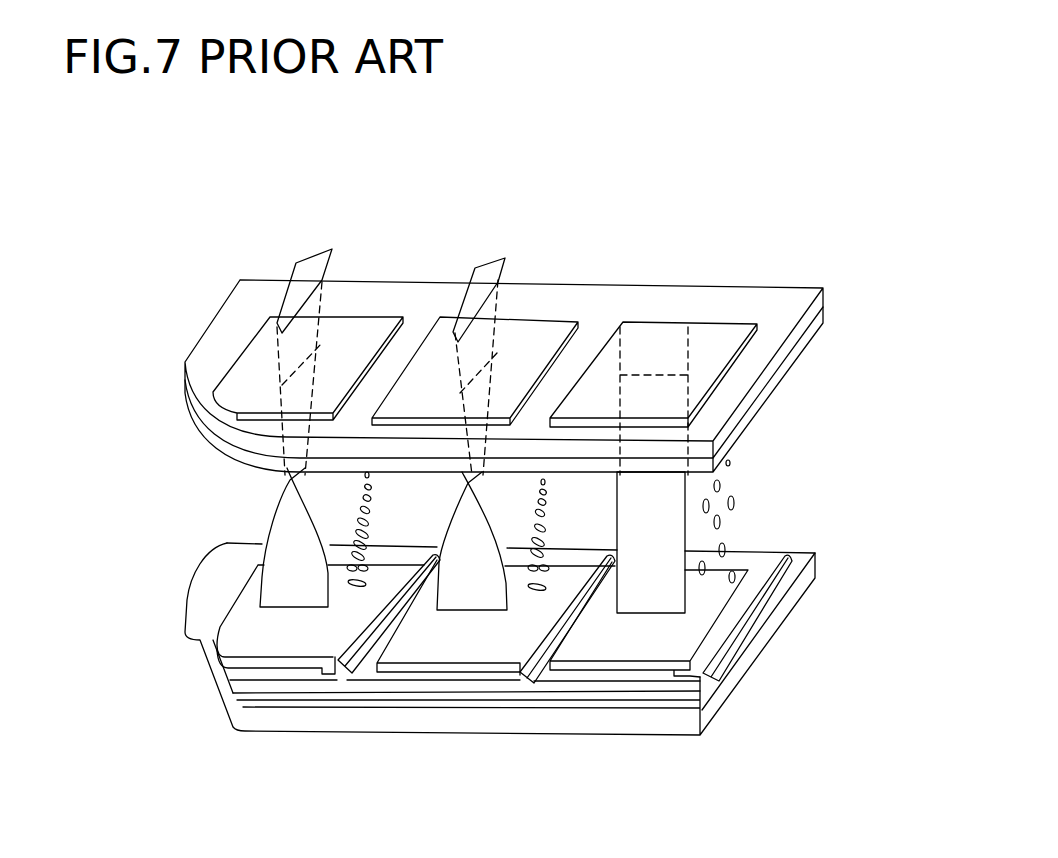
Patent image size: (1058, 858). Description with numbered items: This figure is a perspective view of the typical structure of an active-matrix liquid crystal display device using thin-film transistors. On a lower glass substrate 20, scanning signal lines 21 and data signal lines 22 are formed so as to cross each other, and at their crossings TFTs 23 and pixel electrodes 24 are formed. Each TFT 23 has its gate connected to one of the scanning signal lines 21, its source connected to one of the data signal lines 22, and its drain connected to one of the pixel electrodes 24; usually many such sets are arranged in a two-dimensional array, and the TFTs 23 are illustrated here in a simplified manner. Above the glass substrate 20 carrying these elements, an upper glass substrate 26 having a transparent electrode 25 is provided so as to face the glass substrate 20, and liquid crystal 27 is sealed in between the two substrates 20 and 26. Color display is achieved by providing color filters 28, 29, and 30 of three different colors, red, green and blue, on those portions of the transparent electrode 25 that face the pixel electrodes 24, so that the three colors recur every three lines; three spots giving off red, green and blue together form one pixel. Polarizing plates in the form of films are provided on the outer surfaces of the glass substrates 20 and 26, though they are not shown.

The glass substrate 20 is at (760, 642).
The scanning signal lines 21 is at (685, 695).
The data signal lines 22 is at (780, 557).
The TFTs 23 is at (720, 672).
The pixel electrodes 24 is at (597, 643).
The transparent electrode 25 is at (827, 322).
The glass substrate 26 is at (825, 303).
The liquid crystal 27 is at (350, 508).
The color filter 28 is at (364, 330).
The color filter 29 is at (547, 333).
The color filter 30 is at (730, 335).